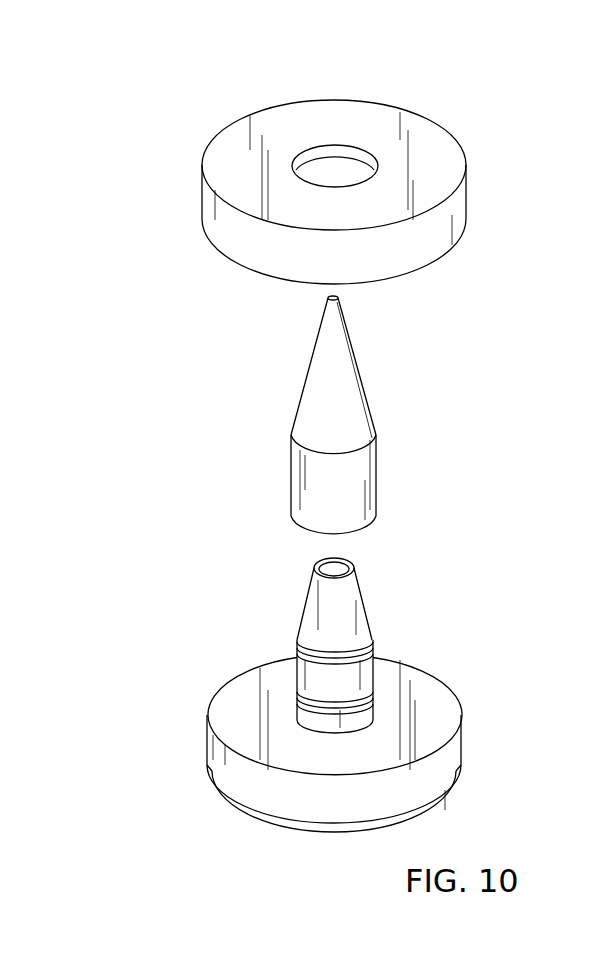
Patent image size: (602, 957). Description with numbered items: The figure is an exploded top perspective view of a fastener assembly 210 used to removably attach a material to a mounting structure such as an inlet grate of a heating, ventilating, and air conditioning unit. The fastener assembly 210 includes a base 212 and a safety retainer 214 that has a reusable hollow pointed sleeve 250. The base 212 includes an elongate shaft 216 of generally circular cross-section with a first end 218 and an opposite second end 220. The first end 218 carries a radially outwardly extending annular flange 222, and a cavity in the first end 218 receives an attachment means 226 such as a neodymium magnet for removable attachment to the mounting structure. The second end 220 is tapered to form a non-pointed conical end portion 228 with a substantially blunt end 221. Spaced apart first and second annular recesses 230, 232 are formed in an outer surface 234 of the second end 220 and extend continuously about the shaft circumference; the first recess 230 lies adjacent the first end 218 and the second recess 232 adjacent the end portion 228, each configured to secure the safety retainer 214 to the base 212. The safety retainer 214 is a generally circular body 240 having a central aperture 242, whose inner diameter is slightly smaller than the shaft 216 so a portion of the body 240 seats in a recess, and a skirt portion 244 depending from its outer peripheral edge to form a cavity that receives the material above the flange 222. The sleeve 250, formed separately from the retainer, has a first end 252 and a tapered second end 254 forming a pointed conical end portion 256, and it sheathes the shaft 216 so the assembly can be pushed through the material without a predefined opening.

The fastener assembly 210 is at (172, 92).
The base 212 is at (300, 596).
The safety retainer 214 is at (510, 105).
The elongate shaft 216 is at (297, 652).
The first end 218 is at (303, 716).
The second end 220 is at (336, 557).
The blunt end 221 is at (339, 561).
The annular flange 222 is at (207, 745).
The attachment means 226 is at (333, 836).
The non-pointed conical end portion 228 is at (472, 543).
The first annular recess 230 is at (300, 694).
The second annular recess 232 is at (373, 643).
The outer surface 234 is at (296, 670).
The circular body 240 is at (248, 152).
The central aperture 242 is at (295, 168).
The skirt portion 244 is at (470, 198).
The hollow pointed sleeve 250 is at (375, 478).
The first end 252 is at (374, 519).
The second end 254 is at (365, 388).
The conical end portion 256 is at (275, 297).